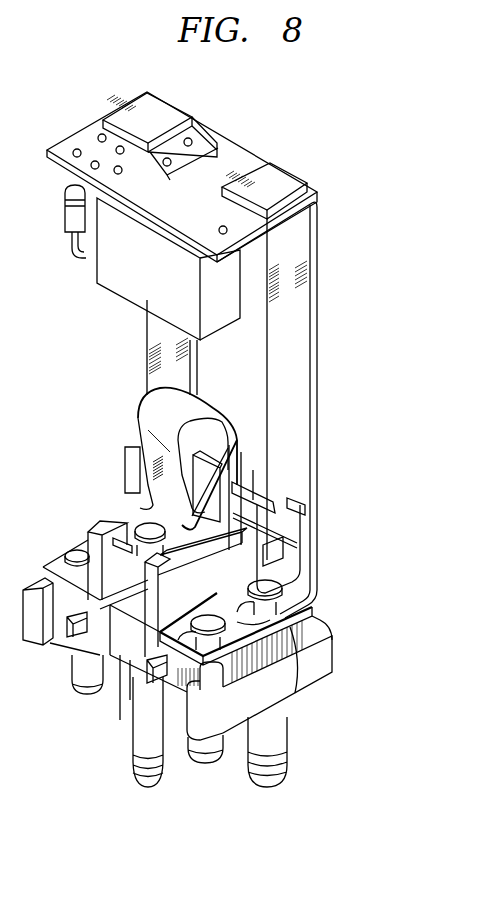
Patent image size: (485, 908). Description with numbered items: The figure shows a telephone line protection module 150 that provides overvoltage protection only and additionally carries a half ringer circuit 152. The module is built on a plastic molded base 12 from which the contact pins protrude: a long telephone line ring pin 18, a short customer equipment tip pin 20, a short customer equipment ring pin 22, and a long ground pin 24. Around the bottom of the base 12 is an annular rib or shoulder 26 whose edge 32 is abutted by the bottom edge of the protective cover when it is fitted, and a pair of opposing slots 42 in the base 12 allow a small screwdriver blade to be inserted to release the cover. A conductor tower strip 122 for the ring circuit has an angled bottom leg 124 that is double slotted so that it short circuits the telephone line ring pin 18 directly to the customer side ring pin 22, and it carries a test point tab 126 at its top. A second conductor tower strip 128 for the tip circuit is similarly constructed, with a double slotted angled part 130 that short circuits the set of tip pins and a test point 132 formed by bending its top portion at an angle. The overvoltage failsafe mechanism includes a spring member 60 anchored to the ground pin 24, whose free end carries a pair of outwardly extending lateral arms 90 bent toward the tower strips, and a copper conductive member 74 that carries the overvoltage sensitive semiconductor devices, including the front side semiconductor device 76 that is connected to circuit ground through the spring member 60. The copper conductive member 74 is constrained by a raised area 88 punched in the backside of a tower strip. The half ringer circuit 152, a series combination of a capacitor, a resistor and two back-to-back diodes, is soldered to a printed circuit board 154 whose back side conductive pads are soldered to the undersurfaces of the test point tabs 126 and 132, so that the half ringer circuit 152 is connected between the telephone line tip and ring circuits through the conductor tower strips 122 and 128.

The plastic molded base 12 is at (209, 663).
The telephone line ring pin 18 is at (290, 735).
The customer equipment tip pin 20 is at (75, 665).
The customer equipment ring pin 22 is at (208, 765).
The ground pin 24 is at (137, 737).
The annular rib or shoulder 26 is at (332, 655).
The edge of annular shoulder 32 is at (325, 632).
The slots 42 is at (127, 664).
The spring member 60 is at (147, 417).
The copper conductive member 74 is at (292, 565).
The front side semiconductor device 76 is at (255, 497).
The raised area 88 is at (306, 508).
The lateral arm 90 is at (268, 500).
The conductor tower strip 122 is at (293, 353).
The angled bottom leg 124 is at (292, 650).
The test point tab 126 is at (277, 188).
The conductor tower strip 128 is at (156, 333).
The double slotted angled part 130 is at (62, 556).
The test point 132 is at (157, 123).
The telephone line protection module 150 is at (182, 165).
The half ringer circuit 152 is at (124, 270).
The printed circuit board 154 is at (84, 140).